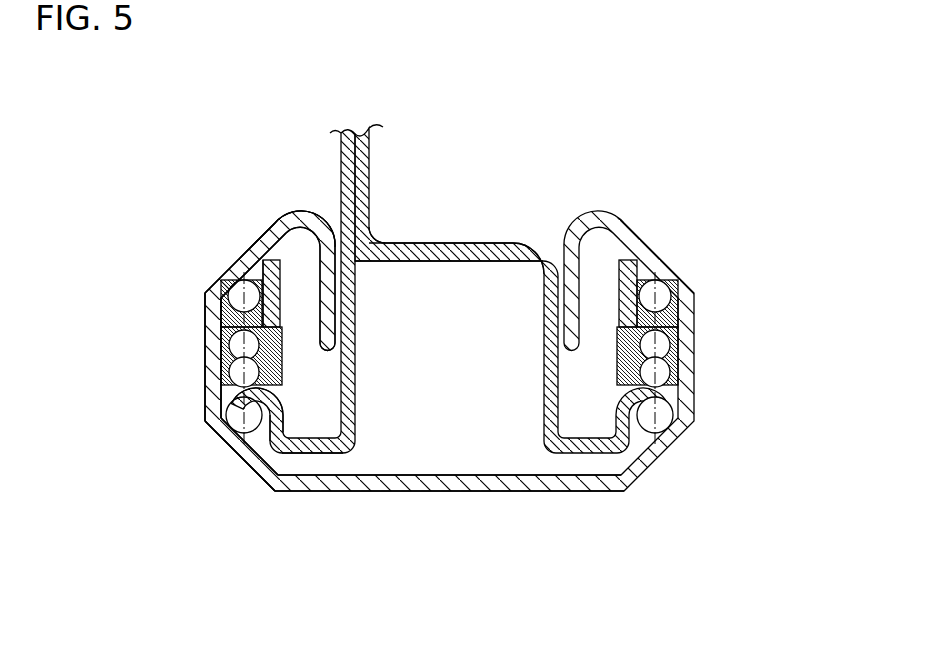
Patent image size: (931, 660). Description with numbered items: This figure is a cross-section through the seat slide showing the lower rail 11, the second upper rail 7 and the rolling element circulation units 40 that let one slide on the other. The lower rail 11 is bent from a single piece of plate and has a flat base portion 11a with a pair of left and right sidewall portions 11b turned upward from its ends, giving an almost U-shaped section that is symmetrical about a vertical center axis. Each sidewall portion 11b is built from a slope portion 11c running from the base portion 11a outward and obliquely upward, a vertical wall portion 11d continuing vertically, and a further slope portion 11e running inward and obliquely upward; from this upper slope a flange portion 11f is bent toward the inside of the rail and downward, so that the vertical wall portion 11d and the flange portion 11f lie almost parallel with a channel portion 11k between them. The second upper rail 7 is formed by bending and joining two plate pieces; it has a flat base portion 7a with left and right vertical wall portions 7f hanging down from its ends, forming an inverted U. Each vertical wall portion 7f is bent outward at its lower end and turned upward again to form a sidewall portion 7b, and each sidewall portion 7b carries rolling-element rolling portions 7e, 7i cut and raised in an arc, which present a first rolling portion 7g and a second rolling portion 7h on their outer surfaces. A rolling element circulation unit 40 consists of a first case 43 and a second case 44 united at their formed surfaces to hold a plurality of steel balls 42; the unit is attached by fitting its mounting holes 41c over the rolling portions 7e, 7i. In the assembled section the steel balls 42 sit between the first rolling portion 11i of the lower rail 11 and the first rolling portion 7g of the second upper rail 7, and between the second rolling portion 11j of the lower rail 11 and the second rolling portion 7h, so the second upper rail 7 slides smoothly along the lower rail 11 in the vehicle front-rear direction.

The second upper rail 7 is at (475, 224).
The base portion 7a is at (422, 252).
The sidewall portion 7b is at (273, 330).
The rolling-element rolling portion 7e is at (277, 397).
The vertical wall portion 7f is at (363, 283).
The first rolling portion 7g is at (269, 462).
The second rolling portion 7h is at (258, 245).
The rolling-element rolling portion 7i is at (262, 310).
The lower rail 11 is at (494, 494).
The base portion 11a is at (388, 483).
The sidewall portion 11b is at (110, 240).
The slope portion 11c is at (235, 455).
The vertical wall portion 11d is at (208, 355).
The slope portion 11e is at (238, 257).
The flange portion 11f is at (313, 255).
The first rolling portion 11i is at (247, 477).
The second rolling portion 11j is at (243, 256).
The channel portion 11k is at (295, 245).
The rolling element circulation unit 40 is at (712, 357).
The mounting hole 41c is at (707, 379).
The steel ball 42 is at (682, 276).
The first case 43 is at (616, 340).
The second case 44 is at (682, 357).